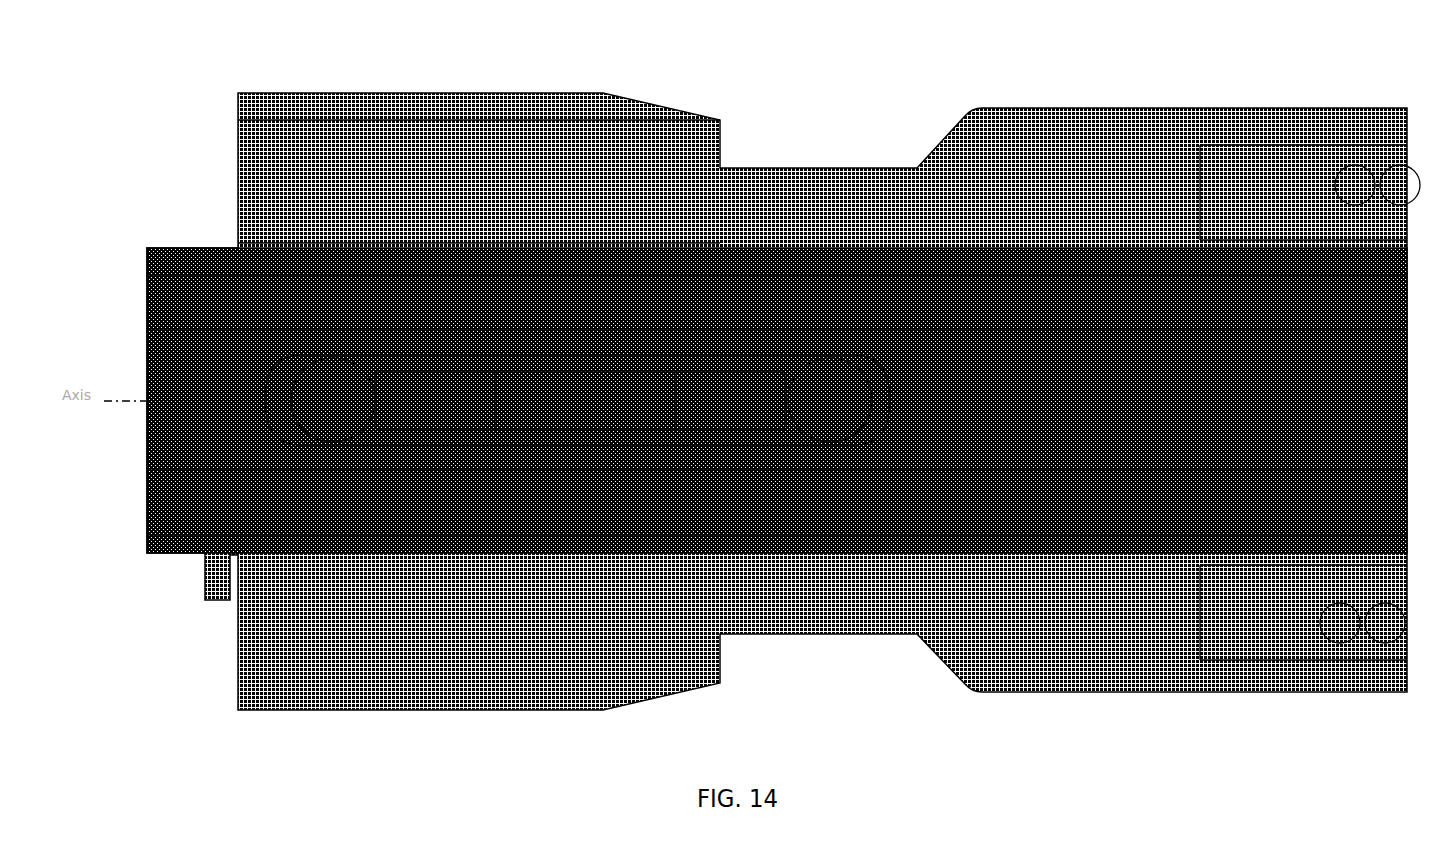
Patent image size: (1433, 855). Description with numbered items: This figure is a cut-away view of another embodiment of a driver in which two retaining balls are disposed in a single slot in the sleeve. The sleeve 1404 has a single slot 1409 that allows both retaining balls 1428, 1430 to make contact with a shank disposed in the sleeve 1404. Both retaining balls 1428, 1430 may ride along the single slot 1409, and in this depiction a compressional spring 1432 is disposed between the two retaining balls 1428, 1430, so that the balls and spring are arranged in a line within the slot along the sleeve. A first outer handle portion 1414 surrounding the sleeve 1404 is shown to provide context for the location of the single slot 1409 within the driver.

The sleeve 1404 is at (173, 495).
The single slot 1409 is at (290, 358).
The first outer handle portion 1414 is at (1006, 100).
The retaining ball 1428 is at (342, 370).
The retaining ball 1430 is at (845, 372).
The compressional spring 1432 is at (480, 382).